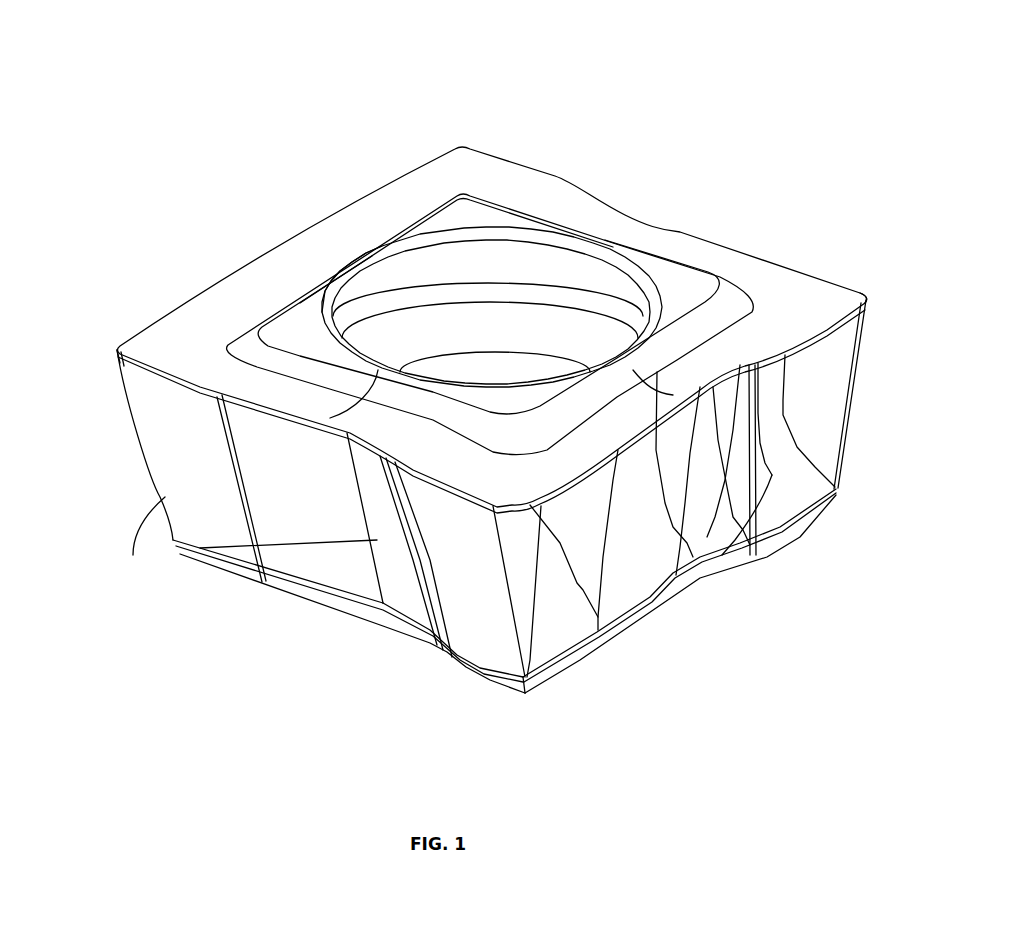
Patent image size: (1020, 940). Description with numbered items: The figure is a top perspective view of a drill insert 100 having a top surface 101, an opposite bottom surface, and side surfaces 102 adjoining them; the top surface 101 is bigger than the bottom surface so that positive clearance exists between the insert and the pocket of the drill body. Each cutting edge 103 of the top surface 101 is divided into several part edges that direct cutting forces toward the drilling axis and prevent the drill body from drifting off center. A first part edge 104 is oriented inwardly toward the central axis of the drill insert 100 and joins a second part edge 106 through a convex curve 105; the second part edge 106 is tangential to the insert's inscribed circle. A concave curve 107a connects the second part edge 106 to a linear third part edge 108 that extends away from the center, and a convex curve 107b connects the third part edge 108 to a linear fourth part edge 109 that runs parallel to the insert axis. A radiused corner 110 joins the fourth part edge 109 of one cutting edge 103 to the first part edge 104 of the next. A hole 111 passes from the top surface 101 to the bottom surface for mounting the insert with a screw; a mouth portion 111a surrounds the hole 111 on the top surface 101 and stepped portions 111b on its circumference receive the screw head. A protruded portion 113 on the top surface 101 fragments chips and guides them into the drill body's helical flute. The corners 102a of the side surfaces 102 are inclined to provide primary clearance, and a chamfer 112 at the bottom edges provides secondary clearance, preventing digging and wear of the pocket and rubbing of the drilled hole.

The drill insert 100 is at (620, 113).
The top surface 101 is at (210, 340).
The side surfaces 102 is at (323, 517).
The corners of the side surface 102a is at (517, 593).
The cutting edge 103 is at (190, 395).
The first part edge 104 is at (598, 632).
The convex curve 105 is at (618, 450).
The second part edge 106 is at (693, 557).
The concave curve 107a is at (760, 557).
The convex curve 107b is at (838, 488).
The third part edge 108 is at (772, 475).
The fourth part edge 109 is at (818, 337).
The corner 110 is at (870, 292).
The hole 111 is at (443, 340).
The mouth portion 111a is at (513, 227).
The stepped portions 111b is at (357, 318).
The chamfer 112 is at (383, 604).
The protruded portion 113 is at (672, 303).